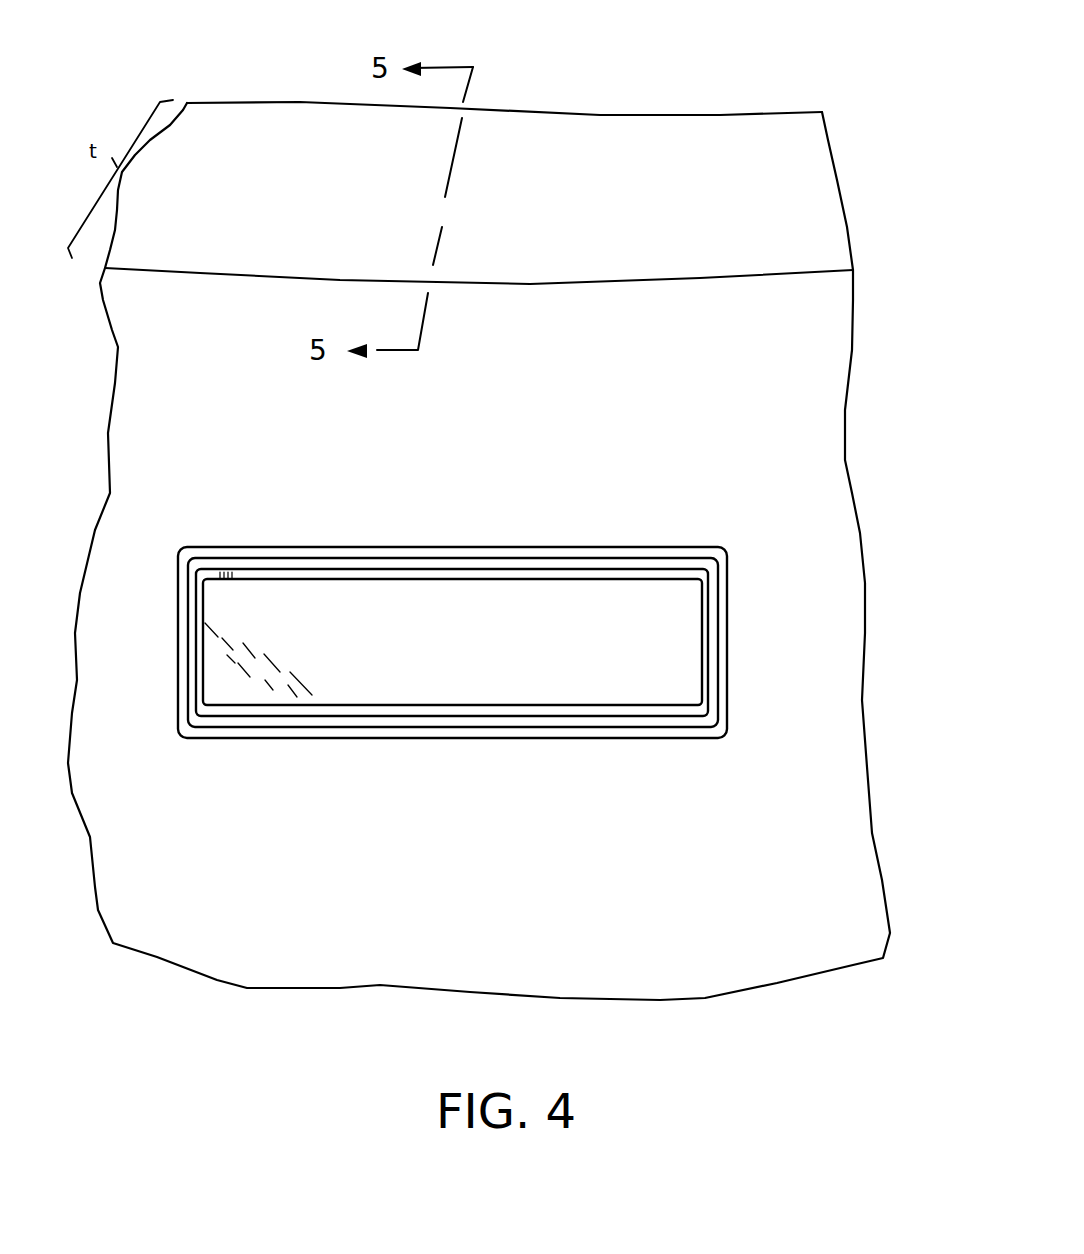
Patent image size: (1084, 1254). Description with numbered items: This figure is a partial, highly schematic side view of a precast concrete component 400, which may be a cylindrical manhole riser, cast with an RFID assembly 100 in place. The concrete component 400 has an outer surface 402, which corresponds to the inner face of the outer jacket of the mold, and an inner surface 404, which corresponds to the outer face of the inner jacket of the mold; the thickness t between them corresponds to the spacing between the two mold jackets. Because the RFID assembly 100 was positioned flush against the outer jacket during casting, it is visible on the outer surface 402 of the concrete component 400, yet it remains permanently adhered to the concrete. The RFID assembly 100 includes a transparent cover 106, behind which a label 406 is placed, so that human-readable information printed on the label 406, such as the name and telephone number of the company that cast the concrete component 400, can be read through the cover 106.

The RFID assembly 100 is at (665, 535).
The cover 106 is at (573, 733).
The concrete component 400 is at (848, 170).
The outer surface 402 is at (840, 307).
The inner surface 404 is at (718, 115).
The label 406 is at (692, 648).